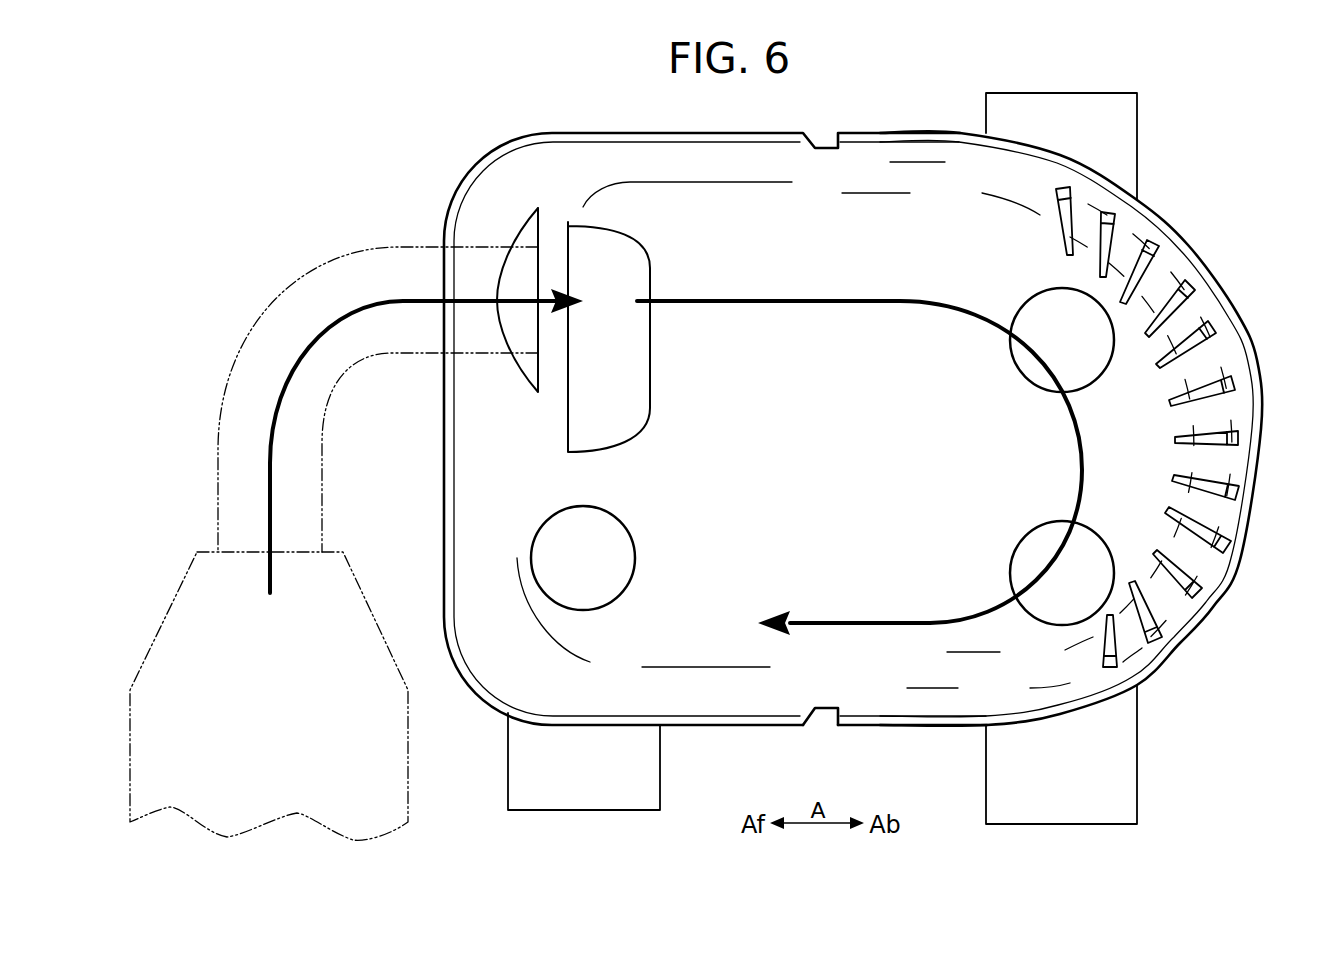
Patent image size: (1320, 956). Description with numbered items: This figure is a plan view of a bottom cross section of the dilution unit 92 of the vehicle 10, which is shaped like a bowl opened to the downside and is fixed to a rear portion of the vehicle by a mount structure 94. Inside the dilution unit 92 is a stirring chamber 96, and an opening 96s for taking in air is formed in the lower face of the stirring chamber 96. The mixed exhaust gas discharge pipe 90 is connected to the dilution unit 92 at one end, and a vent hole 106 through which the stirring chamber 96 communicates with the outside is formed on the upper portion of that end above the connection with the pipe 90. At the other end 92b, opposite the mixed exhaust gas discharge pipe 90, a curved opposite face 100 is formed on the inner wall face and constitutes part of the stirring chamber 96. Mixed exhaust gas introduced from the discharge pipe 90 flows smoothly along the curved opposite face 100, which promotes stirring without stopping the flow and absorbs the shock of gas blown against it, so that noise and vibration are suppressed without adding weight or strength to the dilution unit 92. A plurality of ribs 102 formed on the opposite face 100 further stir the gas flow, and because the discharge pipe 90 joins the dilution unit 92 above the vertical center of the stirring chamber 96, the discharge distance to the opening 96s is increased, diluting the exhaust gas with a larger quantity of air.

The vacuum cleaner 10 is at (268, 157).
The mixed exhaust gas discharge pipe 90 is at (270, 308).
The dilution unit 92 is at (457, 175).
The other end 92b is at (1188, 247).
The mount structure 94 is at (497, 770).
The stirring chamber 96 is at (712, 573).
The opening 96s is at (867, 715).
The curved opposite face 100 is at (1205, 367).
The ribs 102 is at (1212, 333).
The vent hole 106 is at (527, 363).